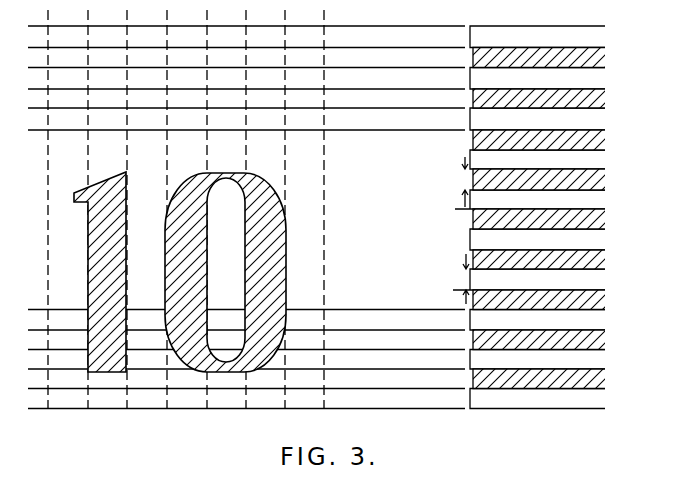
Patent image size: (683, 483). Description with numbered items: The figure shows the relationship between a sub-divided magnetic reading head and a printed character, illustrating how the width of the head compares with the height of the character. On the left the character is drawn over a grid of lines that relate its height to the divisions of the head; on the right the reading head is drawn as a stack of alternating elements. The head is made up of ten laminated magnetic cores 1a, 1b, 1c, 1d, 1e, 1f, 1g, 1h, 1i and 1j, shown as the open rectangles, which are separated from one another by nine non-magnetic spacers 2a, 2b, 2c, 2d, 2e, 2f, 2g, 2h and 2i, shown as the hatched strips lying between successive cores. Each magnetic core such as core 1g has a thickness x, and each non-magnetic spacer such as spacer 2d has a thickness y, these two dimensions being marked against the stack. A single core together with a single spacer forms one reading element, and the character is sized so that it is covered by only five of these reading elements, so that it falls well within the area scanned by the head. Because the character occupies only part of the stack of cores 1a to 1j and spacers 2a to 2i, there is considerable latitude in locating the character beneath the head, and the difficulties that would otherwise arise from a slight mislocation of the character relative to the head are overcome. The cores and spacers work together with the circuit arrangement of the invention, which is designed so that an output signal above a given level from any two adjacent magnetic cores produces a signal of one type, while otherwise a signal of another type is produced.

The laminated magnetic core 1a is at (523, 37).
The laminated magnetic core 1b is at (523, 79).
The laminated magnetic core 1c is at (523, 119).
The laminated magnetic core 1d is at (522, 159).
The laminated magnetic core 1e is at (522, 199).
The laminated magnetic core 1f is at (523, 239).
The laminated magnetic core 1g is at (522, 279).
The laminated magnetic core 1h is at (523, 320).
The laminated magnetic core 1i is at (523, 360).
The laminated magnetic core 1j is at (523, 399).
The non-magnetic spacer 2a is at (551, 58).
The non-magnetic spacer 2b is at (551, 98).
The non-magnetic spacer 2c is at (550, 140).
The non-magnetic spacer 2d is at (551, 179).
The non-magnetic spacer 2e is at (551, 219).
The non-magnetic spacer 2f is at (549, 259).
The non-magnetic spacer 2g is at (551, 300).
The non-magnetic spacer 2h is at (551, 340).
The non-magnetic spacer 2i is at (548, 379).
The thickness of magnetic core x is at (467, 268).
The thickness of spacer y is at (468, 171).